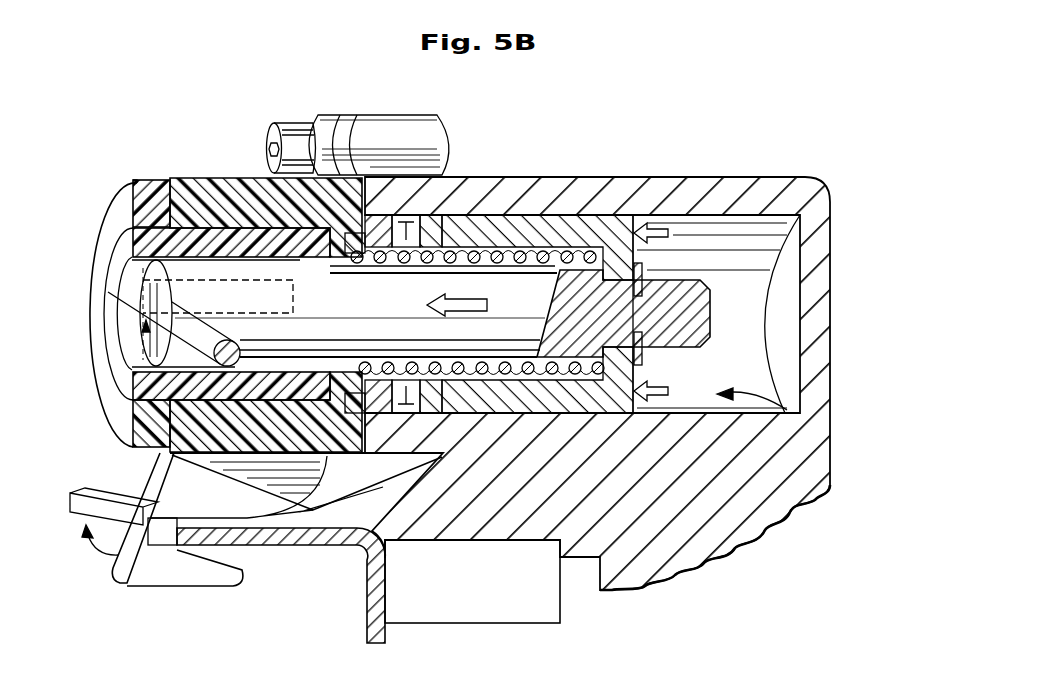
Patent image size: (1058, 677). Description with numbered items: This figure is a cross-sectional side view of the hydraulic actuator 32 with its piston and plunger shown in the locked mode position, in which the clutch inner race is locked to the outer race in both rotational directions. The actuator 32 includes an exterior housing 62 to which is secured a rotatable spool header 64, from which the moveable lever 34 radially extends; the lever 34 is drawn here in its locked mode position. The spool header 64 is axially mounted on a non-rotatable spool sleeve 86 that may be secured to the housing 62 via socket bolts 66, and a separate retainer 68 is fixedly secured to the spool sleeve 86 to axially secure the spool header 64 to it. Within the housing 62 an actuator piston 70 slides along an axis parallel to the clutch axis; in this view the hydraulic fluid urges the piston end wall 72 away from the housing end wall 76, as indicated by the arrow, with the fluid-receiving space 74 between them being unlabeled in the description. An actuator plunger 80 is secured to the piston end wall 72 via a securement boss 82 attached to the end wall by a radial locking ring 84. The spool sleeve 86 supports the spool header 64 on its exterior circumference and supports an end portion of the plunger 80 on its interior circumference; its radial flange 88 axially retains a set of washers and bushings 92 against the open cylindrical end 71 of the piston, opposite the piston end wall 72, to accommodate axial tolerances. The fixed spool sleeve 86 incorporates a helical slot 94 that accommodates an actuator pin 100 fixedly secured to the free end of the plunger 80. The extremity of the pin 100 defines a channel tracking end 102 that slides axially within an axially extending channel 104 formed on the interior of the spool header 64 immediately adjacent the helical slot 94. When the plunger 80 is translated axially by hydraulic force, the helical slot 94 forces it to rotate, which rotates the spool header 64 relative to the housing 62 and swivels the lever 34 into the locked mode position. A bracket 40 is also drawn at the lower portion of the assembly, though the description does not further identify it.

The actuator 32 is at (518, 156).
The lever 34 is at (172, 575).
The mounting bracket 40 is at (320, 545).
The housing 62 is at (590, 183).
The spool header 64 is at (193, 183).
The socket bolts 66 is at (300, 145).
The retainer 68 is at (117, 210).
The actuator piston 70 is at (540, 222).
The open cylindrical end 71 is at (412, 222).
The piston end wall 72 is at (626, 240).
The cavity 74 is at (785, 412).
The housing end wall 76 is at (790, 257).
The actuator plunger 80 is at (506, 309).
The securement boss 82 is at (712, 315).
The radial locking ring 84 is at (643, 355).
The spool sleeve 86 is at (123, 380).
The radial flange 88 is at (338, 183).
The set of washers and bushings 92 is at (390, 183).
The helical slot 94 is at (120, 262).
The actuator pin 100 is at (170, 450).
The channel tracking end 102 is at (190, 270).
The channel 104 is at (262, 280).